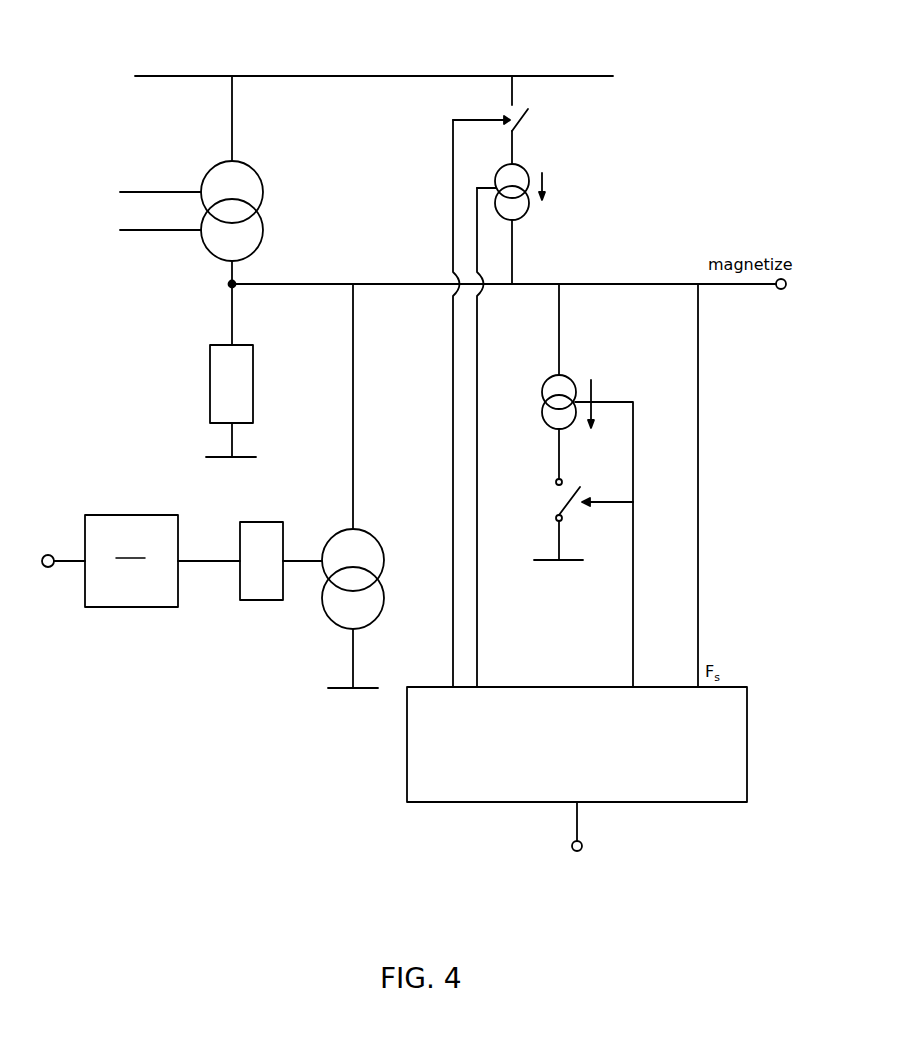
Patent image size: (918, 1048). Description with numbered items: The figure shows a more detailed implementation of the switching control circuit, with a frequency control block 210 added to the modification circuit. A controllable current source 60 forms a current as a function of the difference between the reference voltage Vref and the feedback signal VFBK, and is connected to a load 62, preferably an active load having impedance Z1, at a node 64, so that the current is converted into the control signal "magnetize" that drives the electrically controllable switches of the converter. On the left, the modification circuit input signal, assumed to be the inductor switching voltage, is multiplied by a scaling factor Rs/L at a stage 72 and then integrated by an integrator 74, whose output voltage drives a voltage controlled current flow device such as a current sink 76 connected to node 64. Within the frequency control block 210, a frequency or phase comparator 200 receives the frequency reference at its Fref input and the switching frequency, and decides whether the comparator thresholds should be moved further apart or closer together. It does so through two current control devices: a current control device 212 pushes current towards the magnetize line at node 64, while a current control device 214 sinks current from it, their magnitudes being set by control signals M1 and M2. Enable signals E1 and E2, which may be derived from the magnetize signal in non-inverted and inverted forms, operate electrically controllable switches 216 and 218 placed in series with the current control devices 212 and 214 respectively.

The controllable current source 60 is at (263, 193).
The load 62 is at (253, 381).
The node 64 is at (228, 285).
The scaling stage 72 is at (131, 515).
The integrator 74 is at (260, 522).
The current sink 76 is at (384, 560).
The frequency or phase comparator 200 is at (448, 802).
The frequency control block 210 is at (747, 880).
The current control device 212 is at (529, 203).
The current control device 214 is at (578, 392).
The electrically controllable switch 216 is at (529, 117).
The electrically controllable switch 218 is at (545, 503).